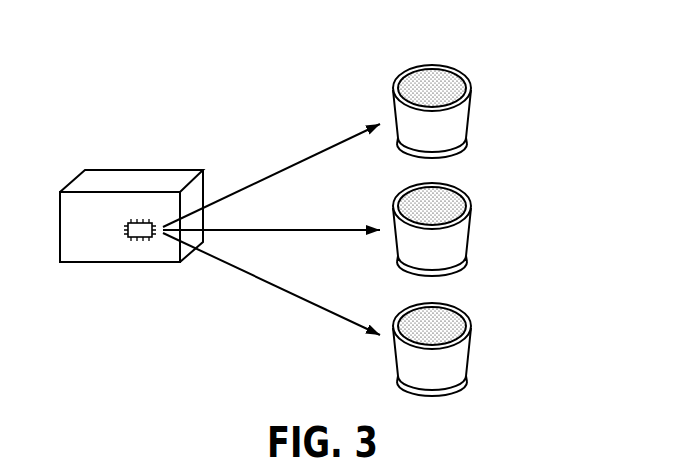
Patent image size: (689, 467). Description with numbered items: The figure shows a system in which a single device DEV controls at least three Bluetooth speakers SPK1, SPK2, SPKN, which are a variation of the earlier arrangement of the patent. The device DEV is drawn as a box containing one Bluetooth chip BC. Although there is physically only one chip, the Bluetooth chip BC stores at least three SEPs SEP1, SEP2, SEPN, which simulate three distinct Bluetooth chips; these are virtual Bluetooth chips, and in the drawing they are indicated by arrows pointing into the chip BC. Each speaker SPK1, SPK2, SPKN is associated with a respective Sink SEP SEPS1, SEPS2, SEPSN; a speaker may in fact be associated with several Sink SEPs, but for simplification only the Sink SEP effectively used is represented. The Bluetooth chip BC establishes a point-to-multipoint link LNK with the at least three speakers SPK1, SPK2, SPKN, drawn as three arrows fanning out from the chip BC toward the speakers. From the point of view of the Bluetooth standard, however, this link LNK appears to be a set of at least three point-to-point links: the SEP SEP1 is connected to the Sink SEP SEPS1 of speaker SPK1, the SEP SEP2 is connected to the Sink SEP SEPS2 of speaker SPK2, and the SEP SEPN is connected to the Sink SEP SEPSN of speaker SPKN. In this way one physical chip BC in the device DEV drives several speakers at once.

The device DEV is at (93, 232).
The Bluetooth chip BC is at (139, 241).
The SEP SEP1 is at (133, 218).
The SEP SEP2 is at (141, 218).
The SEP SEPN is at (150, 218).
The point-to-multipoint link LNK is at (265, 185).
The Bluetooth speaker SPK1 is at (480, 110).
The Bluetooth speaker SPK2 is at (480, 230).
The Bluetooth speaker SPKN is at (480, 348).
The Sink SEP SEPS1 is at (480, 78).
The Sink SEP SEPS2 is at (480, 193).
The Sink SEP SEPSN is at (480, 315).